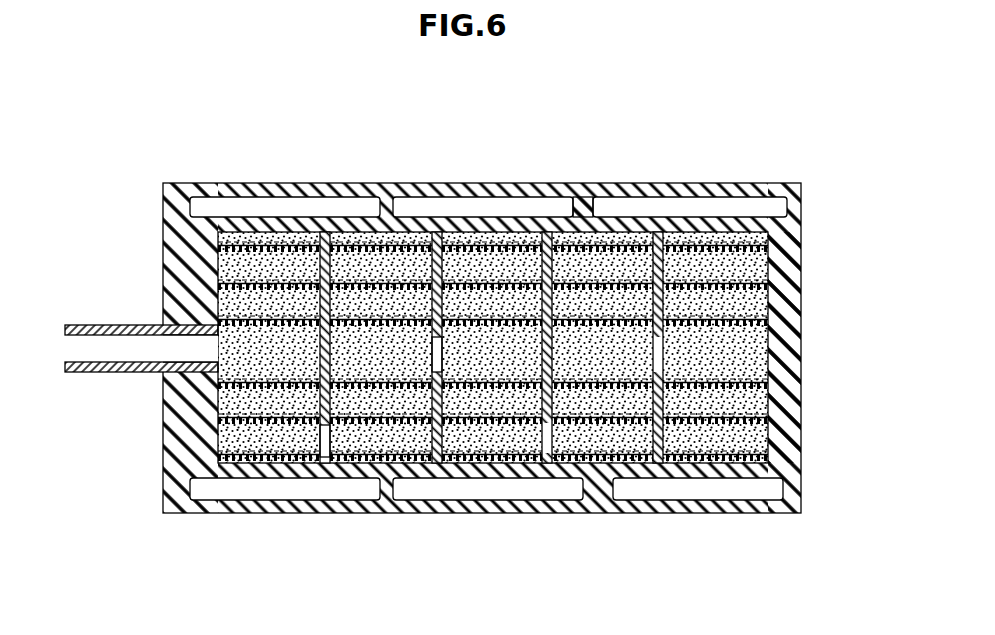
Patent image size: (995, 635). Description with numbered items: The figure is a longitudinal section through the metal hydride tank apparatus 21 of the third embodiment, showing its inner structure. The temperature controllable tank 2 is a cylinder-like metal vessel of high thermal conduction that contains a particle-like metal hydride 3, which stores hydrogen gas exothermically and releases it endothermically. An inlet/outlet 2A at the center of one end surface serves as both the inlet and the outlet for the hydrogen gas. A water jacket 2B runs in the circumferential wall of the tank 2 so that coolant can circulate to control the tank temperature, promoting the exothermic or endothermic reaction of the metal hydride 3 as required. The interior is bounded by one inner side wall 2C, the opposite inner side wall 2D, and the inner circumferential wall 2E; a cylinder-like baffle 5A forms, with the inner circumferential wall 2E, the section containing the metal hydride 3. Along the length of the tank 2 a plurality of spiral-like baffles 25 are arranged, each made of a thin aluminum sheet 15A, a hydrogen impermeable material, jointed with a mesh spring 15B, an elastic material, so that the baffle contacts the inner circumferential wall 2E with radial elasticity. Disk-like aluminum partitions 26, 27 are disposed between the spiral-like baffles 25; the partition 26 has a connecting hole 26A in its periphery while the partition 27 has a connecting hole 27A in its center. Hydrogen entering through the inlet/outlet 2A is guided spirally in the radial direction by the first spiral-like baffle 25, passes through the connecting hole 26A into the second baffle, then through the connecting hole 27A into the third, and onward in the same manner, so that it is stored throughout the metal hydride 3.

The metal hydride tank apparatus 21 is at (645, 155).
The tank 2 is at (370, 183).
The inlet/outlet 2A is at (125, 325).
The water jacket 2B is at (263, 207).
The inner side wall 2C is at (248, 418).
The inner side wall 2D is at (801, 470).
The inner circumferential wall 2E is at (801, 185).
The metal hydride 3 is at (515, 300).
The cylinder-like baffle 5A is at (231, 480).
The thin aluminum sheet 15A is at (752, 277).
The mesh spring 15B is at (725, 287).
The spiral-like baffle 25 is at (241, 240).
The partition 26 is at (378, 463).
The connecting hole 26A is at (341, 478).
The partition 27 is at (435, 373).
The connecting hole 27A is at (437, 337).